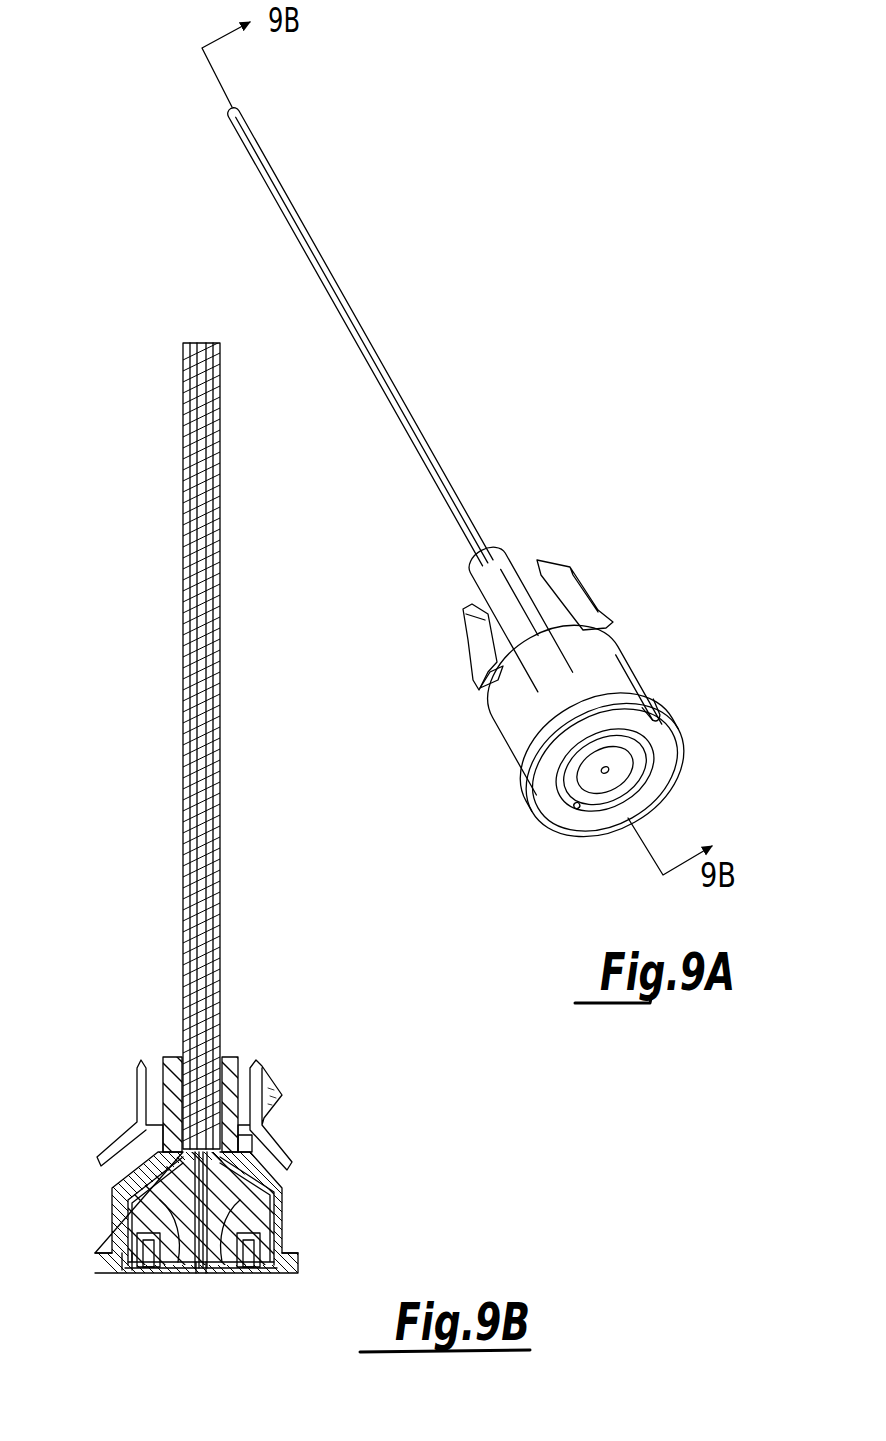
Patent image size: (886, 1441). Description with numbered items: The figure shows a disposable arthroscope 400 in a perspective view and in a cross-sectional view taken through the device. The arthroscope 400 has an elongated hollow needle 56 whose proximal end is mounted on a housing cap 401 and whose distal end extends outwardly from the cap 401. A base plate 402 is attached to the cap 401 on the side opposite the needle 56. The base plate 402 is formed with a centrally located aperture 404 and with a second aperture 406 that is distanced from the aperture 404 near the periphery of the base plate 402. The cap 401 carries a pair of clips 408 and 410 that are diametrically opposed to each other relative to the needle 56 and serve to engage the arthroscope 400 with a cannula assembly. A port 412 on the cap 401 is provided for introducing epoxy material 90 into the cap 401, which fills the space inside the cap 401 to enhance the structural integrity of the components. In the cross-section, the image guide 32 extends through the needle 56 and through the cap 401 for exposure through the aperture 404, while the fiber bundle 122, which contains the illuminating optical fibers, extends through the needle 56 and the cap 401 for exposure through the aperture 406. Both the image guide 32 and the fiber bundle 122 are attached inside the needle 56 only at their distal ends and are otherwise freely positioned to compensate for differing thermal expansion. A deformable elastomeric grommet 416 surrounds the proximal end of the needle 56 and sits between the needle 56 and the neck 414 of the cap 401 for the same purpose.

In FIG. 9A, the arthroscope 400 is at (548, 398).
In FIG. 9A, the needle 56 is at (288, 193).
In FIG. 9B, the needle 56 is at (183, 546).
In FIG. 9A, the housing cap 401 is at (644, 658).
In FIG. 9B, the housing cap 401 is at (112, 1200).
In FIG. 9A, the base plate 402 is at (541, 787).
In FIG. 9B, the base plate 402 is at (273, 1273).
In FIG. 9A, the aperture 404 is at (612, 778).
In FIG. 9B, the aperture 404 is at (200, 1273).
In FIG. 9A, the aperture 406 is at (577, 809).
In FIG. 9B, the aperture 406 is at (127, 1273).
In FIG. 9A, the clip 408 is at (462, 614).
In FIG. 9B, the clip 408 is at (137, 1078).
In FIG. 9A, the clip 410 is at (566, 562).
In FIG. 9B, the clip 410 is at (276, 1092).
In FIG. 9A, the port 412 is at (485, 673).
In FIG. 9B, the neck 414 is at (165, 1054).
In FIG. 9B, the grommet 416 is at (226, 1054).
In FIG. 9B, the epoxy material 90 is at (249, 1214).
In FIG. 9B, the fiber bundle 122 is at (170, 1272).
In FIG. 9B, the image guide 32 is at (212, 1272).